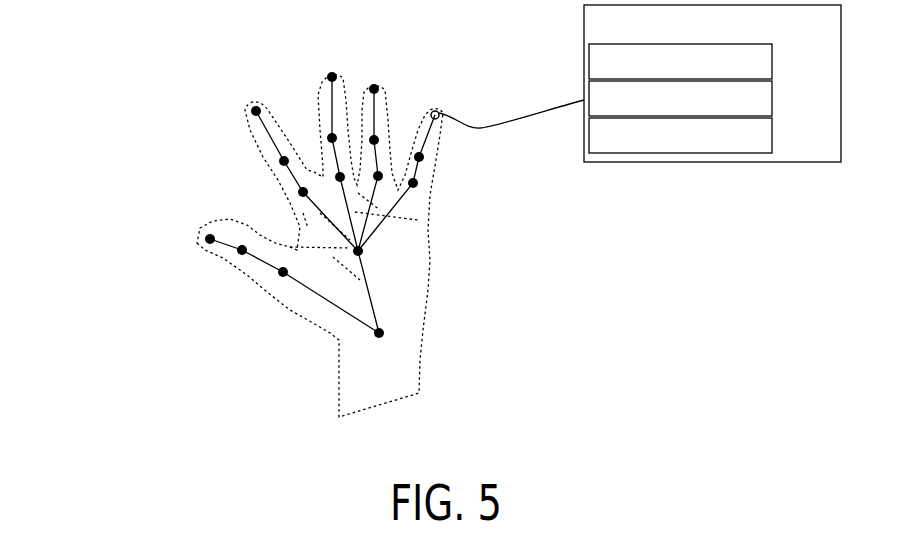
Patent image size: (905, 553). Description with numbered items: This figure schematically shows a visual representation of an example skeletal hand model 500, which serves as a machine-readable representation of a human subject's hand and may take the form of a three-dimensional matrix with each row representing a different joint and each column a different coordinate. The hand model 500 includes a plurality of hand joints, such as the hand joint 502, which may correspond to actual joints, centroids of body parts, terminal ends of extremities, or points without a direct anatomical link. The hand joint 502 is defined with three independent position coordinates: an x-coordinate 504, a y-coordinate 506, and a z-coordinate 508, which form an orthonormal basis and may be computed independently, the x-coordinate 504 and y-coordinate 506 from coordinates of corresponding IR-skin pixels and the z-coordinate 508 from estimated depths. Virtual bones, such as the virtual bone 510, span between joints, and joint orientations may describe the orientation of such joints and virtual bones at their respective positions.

The skeletal hand model 500 is at (126, 240).
The hand joint 502 is at (752, 40).
The x-coordinate 504 is at (772, 60).
The y-coordinate 506 is at (772, 98).
The z-coordinate 508 is at (772, 137).
The virtual bone 510 is at (319, 293).